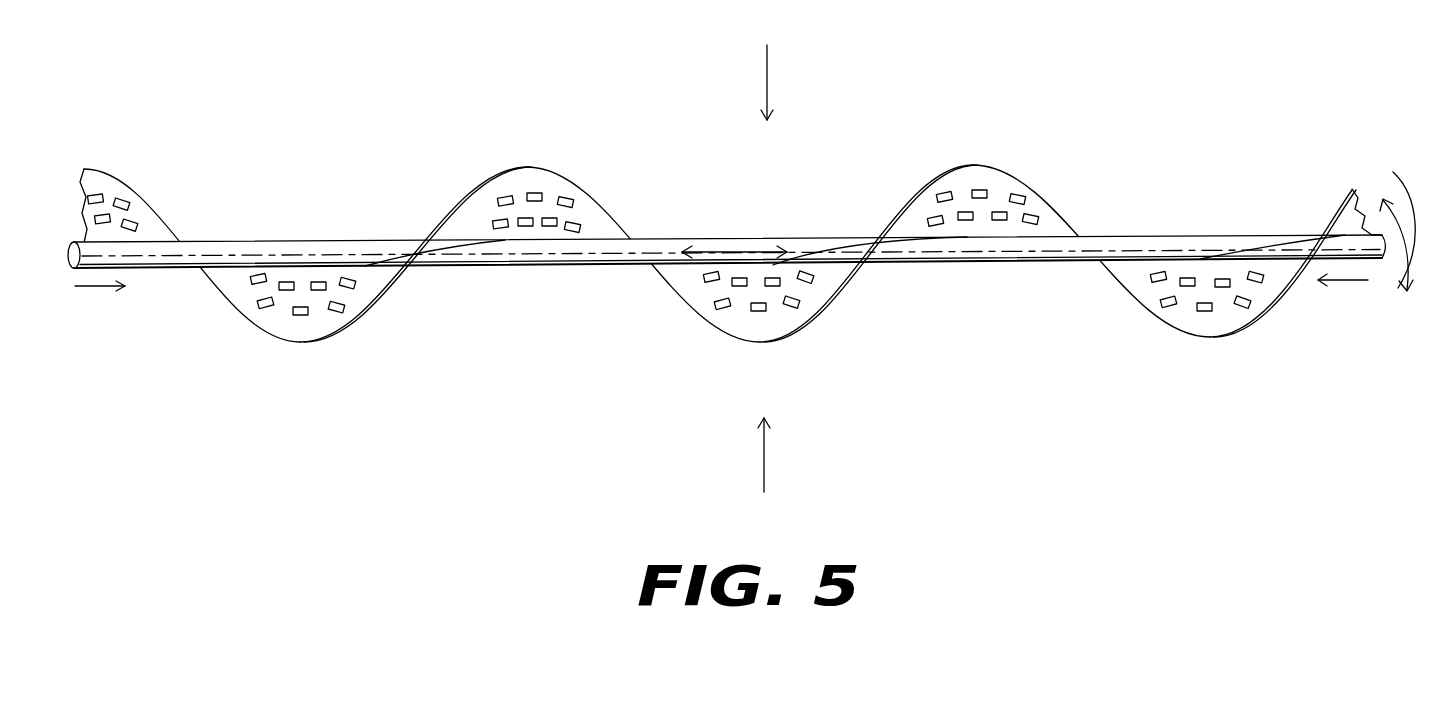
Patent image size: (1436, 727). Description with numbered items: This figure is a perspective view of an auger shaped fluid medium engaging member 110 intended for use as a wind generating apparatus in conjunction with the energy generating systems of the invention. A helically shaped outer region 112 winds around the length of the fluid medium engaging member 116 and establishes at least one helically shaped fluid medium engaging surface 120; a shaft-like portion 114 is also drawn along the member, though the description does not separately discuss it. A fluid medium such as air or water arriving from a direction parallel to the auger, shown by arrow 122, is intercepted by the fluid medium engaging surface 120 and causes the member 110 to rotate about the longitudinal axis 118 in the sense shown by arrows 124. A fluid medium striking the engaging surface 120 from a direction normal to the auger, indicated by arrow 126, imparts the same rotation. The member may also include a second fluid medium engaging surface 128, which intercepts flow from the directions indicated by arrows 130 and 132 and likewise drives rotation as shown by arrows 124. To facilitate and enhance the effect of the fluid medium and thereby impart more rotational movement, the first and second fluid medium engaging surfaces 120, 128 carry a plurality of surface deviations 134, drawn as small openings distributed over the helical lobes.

The auger shaped fluid medium engaging member 110 is at (485, 51).
The helically shaped outer region 112 is at (517, 163).
The central tubular shaft 114 is at (503, 243).
The fluid medium engaging member 116 is at (967, 267).
The longitudinal axis 118 is at (738, 250).
The fluid medium engaging surface 120 is at (298, 328).
The arrow 122 is at (100, 284).
The arrows 124 is at (1396, 221).
The arrow 126 is at (767, 68).
The second fluid medium engaging surface 128 is at (977, 180).
The arrow 130 is at (1342, 283).
The arrow 132 is at (764, 465).
The surface deviations 134 is at (316, 282).